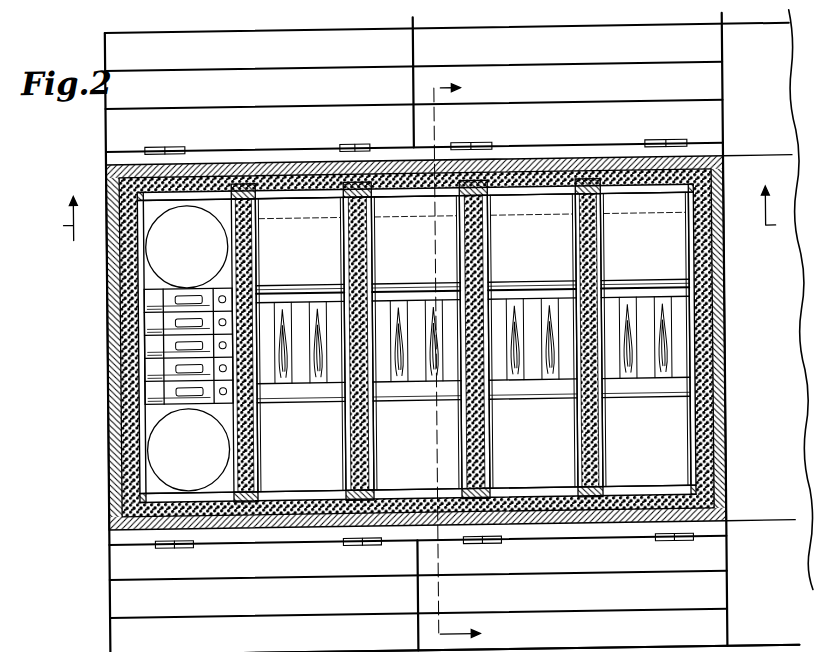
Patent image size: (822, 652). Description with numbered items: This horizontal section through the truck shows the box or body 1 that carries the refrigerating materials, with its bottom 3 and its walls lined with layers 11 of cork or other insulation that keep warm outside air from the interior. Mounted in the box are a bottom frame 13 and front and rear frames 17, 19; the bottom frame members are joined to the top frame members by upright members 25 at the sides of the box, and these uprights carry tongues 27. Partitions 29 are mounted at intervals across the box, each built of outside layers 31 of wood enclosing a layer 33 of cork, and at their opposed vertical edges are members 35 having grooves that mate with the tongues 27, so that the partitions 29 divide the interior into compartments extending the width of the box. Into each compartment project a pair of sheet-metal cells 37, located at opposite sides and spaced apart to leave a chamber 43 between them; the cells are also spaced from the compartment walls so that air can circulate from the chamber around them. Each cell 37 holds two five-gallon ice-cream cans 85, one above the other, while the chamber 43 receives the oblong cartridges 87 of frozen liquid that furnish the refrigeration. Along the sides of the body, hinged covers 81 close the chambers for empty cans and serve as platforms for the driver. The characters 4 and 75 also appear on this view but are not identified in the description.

The box or body 1 is at (106, 303).
The bottom 3 is at (417, 213).
The section line 4- 4 is at (454, 360).
The layers of cork insulation 11 is at (262, 183).
The bottom frame 13 is at (722, 301).
The front frame 17 is at (688, 198).
The rear frame 19 is at (146, 211).
The upright members 25 is at (255, 194).
The tongues 27 is at (258, 212).
The partitions 29 is at (258, 272).
The outside layers 31 is at (238, 253).
The layer of cork insulation 33 is at (238, 271).
The grooved members 35 is at (232, 209).
The cells 37 is at (140, 263).
The chamber 43 is at (140, 336).
The floor 75 is at (428, 642).
The hinged covers 81 is at (106, 133).
The ice-cream cans 85 is at (137, 233).
The cartridge 87 is at (140, 307).